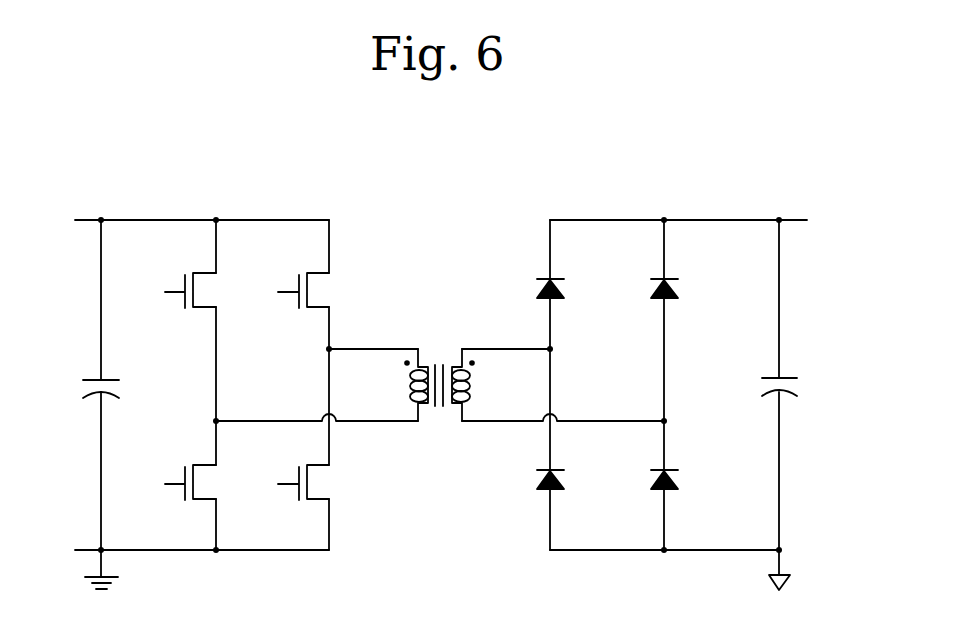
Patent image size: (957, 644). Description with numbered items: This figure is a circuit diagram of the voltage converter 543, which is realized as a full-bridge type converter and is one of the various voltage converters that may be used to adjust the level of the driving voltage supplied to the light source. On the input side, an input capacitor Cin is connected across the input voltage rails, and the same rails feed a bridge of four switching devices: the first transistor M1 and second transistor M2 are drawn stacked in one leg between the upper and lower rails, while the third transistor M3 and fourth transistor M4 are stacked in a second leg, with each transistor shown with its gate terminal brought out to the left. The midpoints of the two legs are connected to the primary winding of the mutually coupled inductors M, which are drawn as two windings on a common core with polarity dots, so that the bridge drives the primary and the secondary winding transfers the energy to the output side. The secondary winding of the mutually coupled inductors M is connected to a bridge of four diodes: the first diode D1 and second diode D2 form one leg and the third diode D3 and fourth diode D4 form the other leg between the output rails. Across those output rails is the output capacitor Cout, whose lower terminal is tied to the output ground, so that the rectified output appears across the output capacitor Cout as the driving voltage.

The voltage converter 543 is at (725, 171).
The input capacitor Cin is at (80, 388).
The output capacitor Cout is at (805, 388).
The first transistor M1 is at (202, 290).
The second transistor M2 is at (202, 482).
The third transistor M3 is at (316, 290).
The fourth transistor M4 is at (316, 482).
The mutually coupled inductors M is at (439, 373).
The first diode D1 is at (565, 290).
The second diode D2 is at (565, 481).
The third diode D3 is at (680, 290).
The fourth diode D4 is at (680, 481).